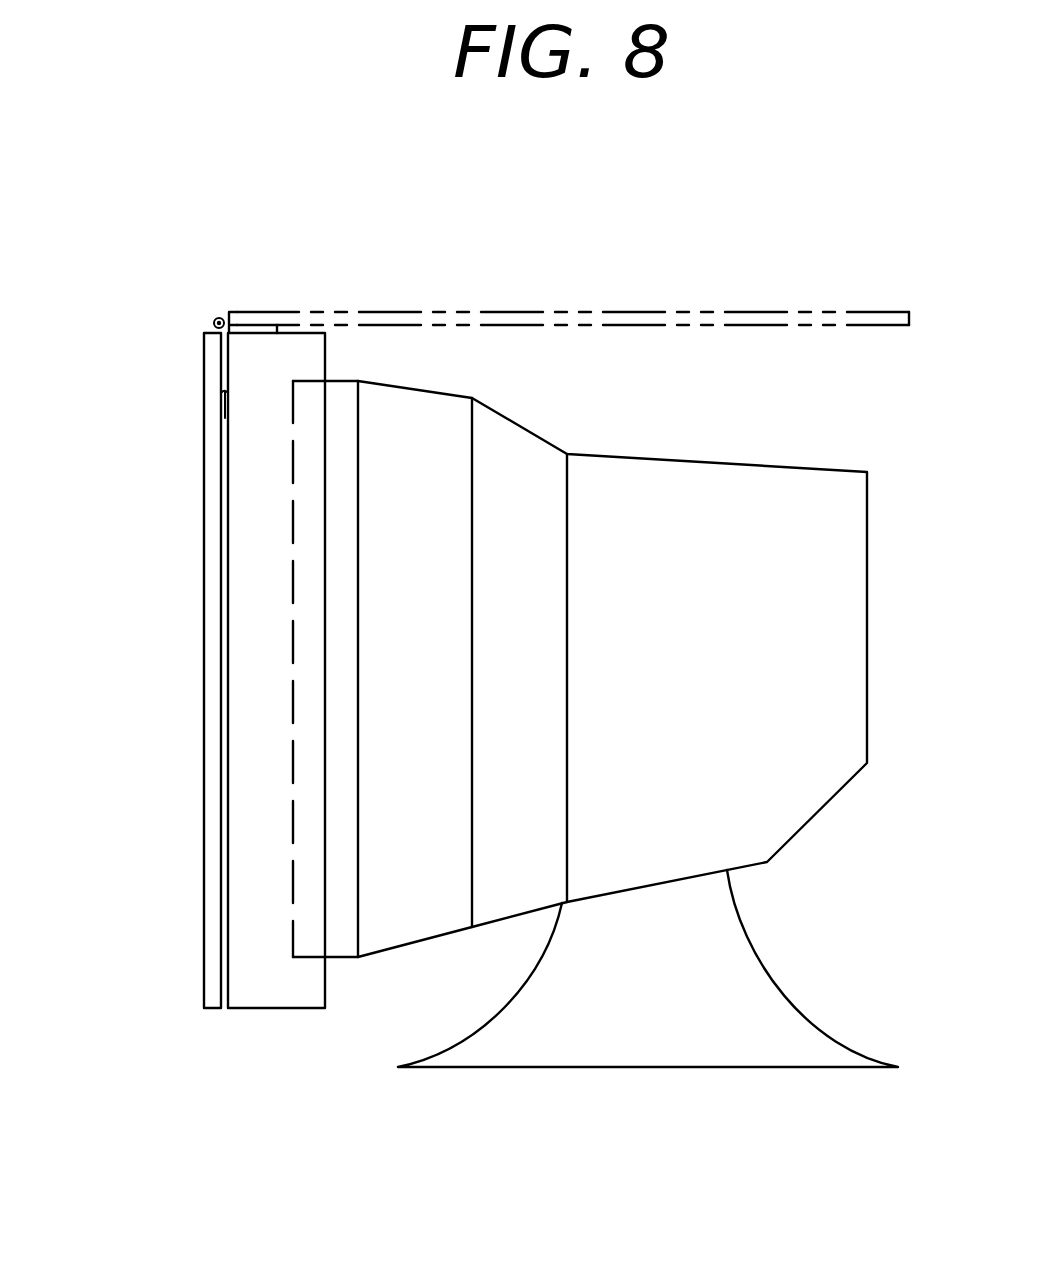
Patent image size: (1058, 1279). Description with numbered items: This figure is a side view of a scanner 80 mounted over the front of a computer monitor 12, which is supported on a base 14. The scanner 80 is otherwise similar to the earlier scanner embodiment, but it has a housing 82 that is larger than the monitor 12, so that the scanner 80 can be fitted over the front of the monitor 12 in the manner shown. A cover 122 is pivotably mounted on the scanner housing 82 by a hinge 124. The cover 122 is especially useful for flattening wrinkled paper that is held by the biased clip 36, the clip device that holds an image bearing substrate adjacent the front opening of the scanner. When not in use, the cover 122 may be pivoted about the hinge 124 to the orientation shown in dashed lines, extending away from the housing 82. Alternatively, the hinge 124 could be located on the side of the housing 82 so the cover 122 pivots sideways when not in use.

The monitor 12 is at (792, 497).
The base 14 is at (742, 1012).
The biased clip 36 is at (222, 400).
The scanner 80 is at (480, 689).
The housing 82 is at (287, 1008).
The cover 122 is at (203, 607).
The hinge 124 is at (215, 318).